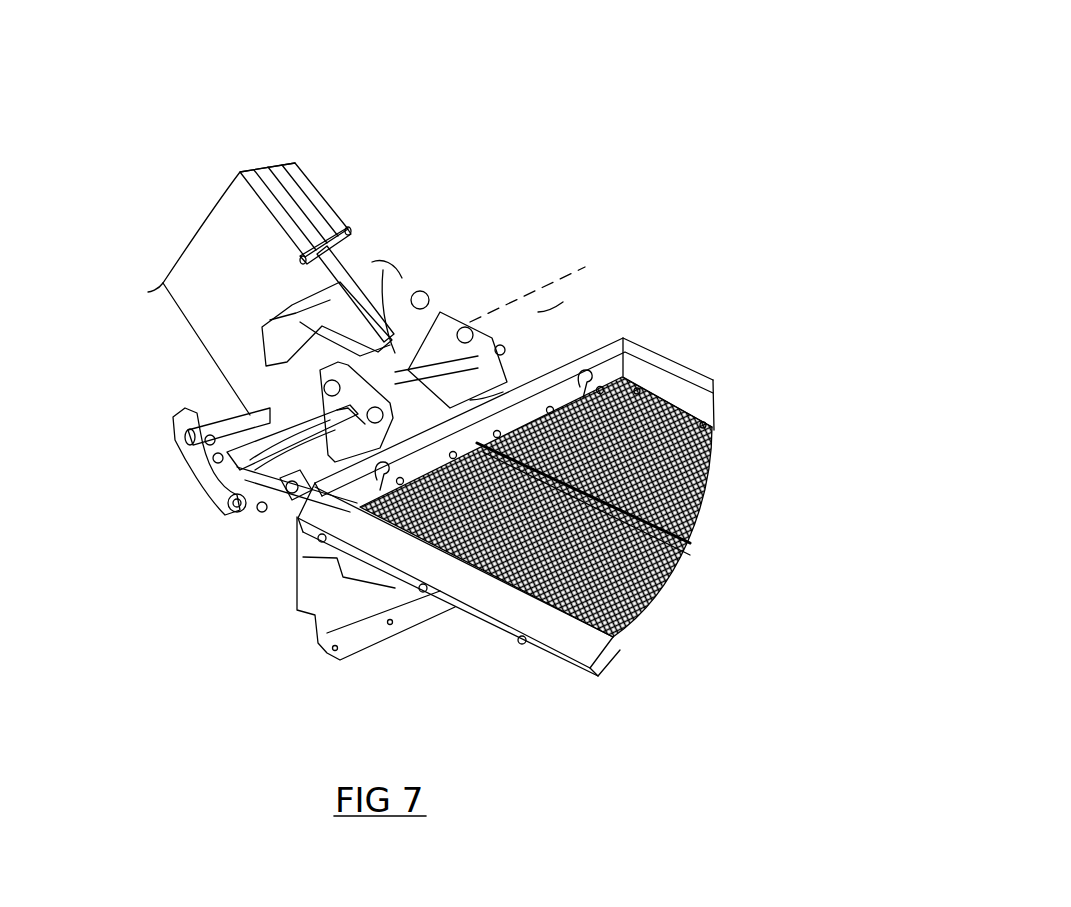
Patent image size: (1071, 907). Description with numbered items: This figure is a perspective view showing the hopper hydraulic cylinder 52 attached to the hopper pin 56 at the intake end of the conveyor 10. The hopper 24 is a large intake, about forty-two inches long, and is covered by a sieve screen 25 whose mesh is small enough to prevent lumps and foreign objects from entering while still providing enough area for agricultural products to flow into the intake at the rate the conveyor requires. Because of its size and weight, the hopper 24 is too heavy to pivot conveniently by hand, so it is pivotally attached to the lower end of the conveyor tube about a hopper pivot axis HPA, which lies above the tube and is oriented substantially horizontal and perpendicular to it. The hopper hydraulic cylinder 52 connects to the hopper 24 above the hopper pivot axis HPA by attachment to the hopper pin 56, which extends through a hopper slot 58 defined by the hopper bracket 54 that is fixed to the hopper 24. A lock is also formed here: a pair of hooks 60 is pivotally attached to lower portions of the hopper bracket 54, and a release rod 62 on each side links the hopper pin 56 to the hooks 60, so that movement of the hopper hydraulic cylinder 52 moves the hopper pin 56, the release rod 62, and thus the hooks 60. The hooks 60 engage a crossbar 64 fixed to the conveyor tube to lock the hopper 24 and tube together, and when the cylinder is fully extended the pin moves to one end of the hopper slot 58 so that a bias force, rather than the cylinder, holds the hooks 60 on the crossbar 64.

The conveyor 10 is at (160, 290).
The hopper hydraulic cylinder 52 is at (313, 182).
The hopper pin 56 is at (383, 267).
The hopper pivot axis HPA is at (541, 288).
The hopper slot 58 is at (563, 302).
The hopper bracket 54 is at (503, 392).
The sieve screen 25 is at (717, 492).
The hopper 24 is at (578, 633).
The hooks 60 is at (215, 497).
The release rod 62 is at (292, 487).
The crossbar 64 is at (217, 410).